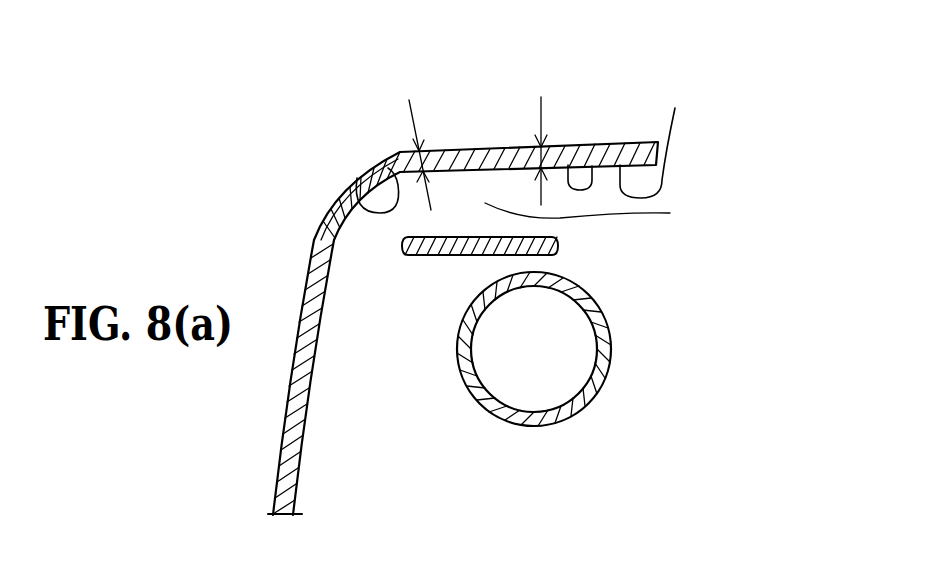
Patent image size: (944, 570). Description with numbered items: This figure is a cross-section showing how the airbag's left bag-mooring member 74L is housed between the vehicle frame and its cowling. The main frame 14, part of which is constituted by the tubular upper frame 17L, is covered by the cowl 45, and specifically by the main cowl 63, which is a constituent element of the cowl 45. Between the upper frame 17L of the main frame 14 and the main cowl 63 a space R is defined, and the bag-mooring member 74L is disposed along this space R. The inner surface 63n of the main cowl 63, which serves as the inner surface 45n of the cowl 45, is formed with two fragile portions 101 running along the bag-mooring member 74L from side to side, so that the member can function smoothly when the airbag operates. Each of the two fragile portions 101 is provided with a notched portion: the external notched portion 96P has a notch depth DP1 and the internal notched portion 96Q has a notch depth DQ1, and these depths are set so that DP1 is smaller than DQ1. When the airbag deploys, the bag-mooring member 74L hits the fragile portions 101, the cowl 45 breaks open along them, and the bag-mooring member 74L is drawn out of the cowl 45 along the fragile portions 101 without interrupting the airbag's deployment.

The cowl 45 is at (413, 328).
The main cowl 63 is at (317, 240).
The inner surface of the main cowl 63n is at (717, 131).
The inner surface of the cowl 45n is at (717, 131).
The external notched portion 96P is at (346, 200).
The internal notched portion 96Q is at (598, 165).
The fragile portion 101 is at (496, 111).
The notch depth of the external notched portion DP1 is at (445, 150).
The notch depth of the internal notched portion DQ1 is at (541, 134).
The space R is at (594, 214).
The bag-mooring member 74L is at (556, 237).
The upper frame 17L is at (596, 301).
The main frame 14 is at (610, 349).